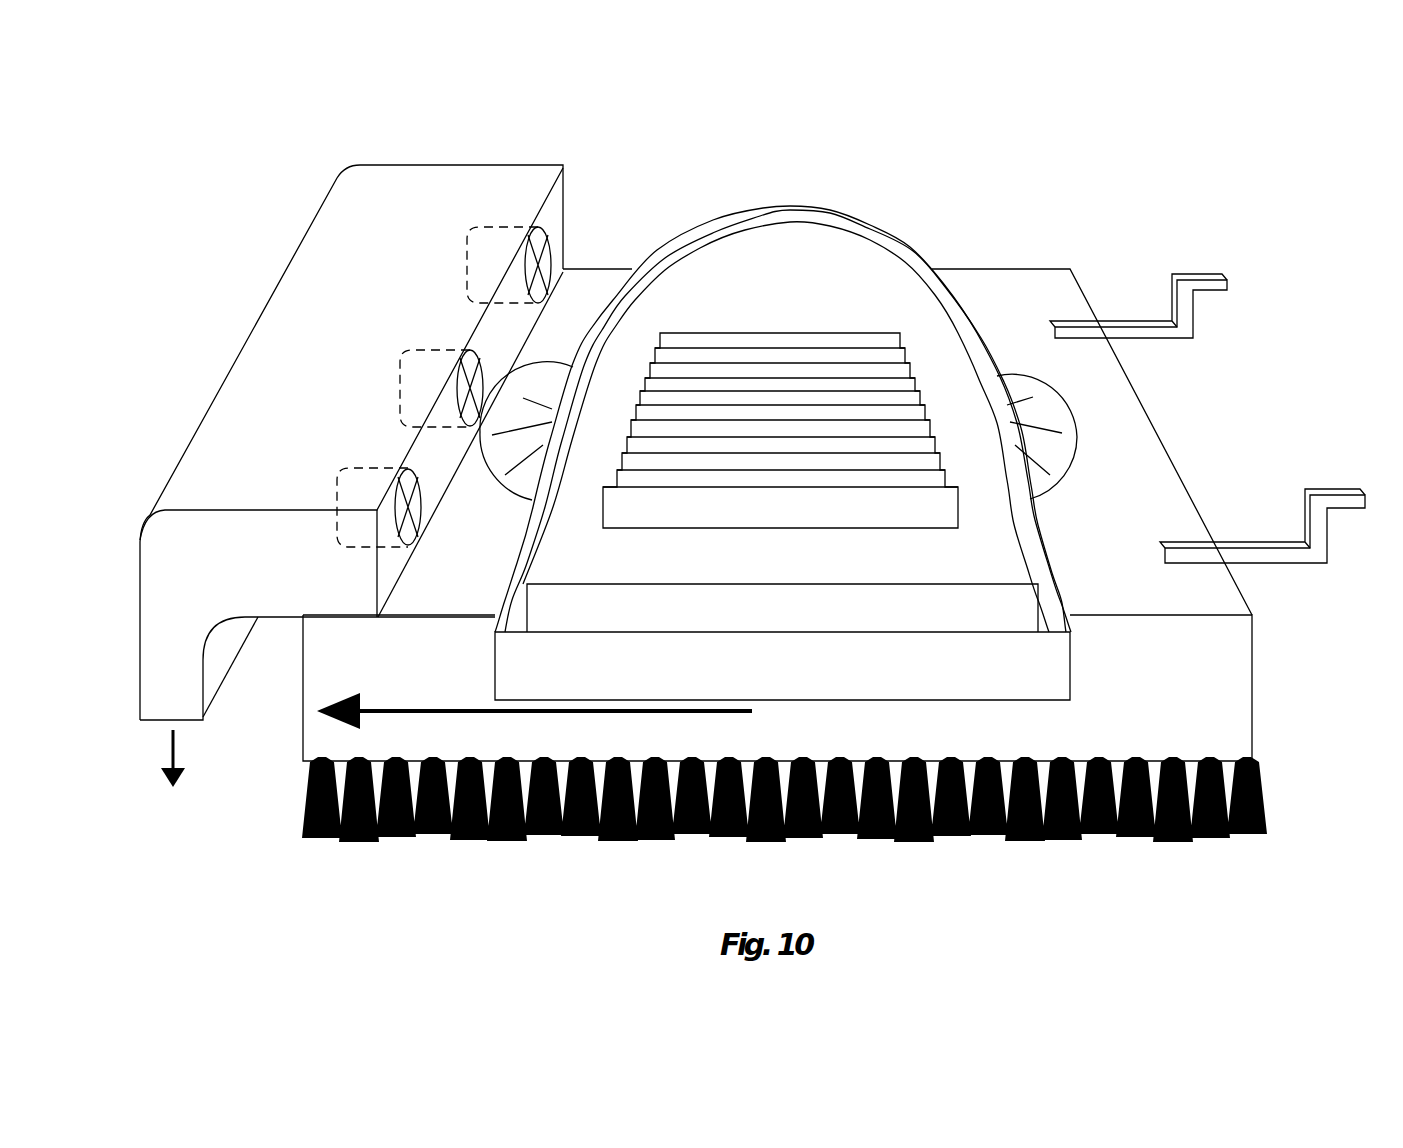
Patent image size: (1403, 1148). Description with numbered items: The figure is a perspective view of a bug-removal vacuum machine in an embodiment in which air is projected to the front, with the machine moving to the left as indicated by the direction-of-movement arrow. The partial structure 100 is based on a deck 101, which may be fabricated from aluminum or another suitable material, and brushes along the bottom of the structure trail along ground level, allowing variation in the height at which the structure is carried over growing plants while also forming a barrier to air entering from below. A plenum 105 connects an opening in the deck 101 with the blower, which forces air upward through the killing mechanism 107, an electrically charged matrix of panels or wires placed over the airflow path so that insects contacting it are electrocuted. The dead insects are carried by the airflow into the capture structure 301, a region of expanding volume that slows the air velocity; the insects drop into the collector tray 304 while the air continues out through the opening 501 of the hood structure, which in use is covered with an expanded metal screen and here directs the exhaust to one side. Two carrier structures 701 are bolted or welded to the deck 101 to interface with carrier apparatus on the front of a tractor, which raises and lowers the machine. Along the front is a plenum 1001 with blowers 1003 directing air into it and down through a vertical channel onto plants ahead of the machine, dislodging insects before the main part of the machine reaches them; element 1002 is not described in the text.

The partial structure 100 is at (587, 158).
The deck 101 is at (977, 280).
The plenum 105 is at (1035, 440).
The killing mechanism 107 is at (755, 335).
The capture structure 301 is at (802, 175).
The collector tray 304 is at (1070, 650).
The opening of the hood structure 501 is at (800, 263).
The carrier structures 701 is at (1200, 277).
The plenum 1001 is at (375, 187).
The foot 1002 is at (215, 662).
The blowers 1003 is at (365, 480).